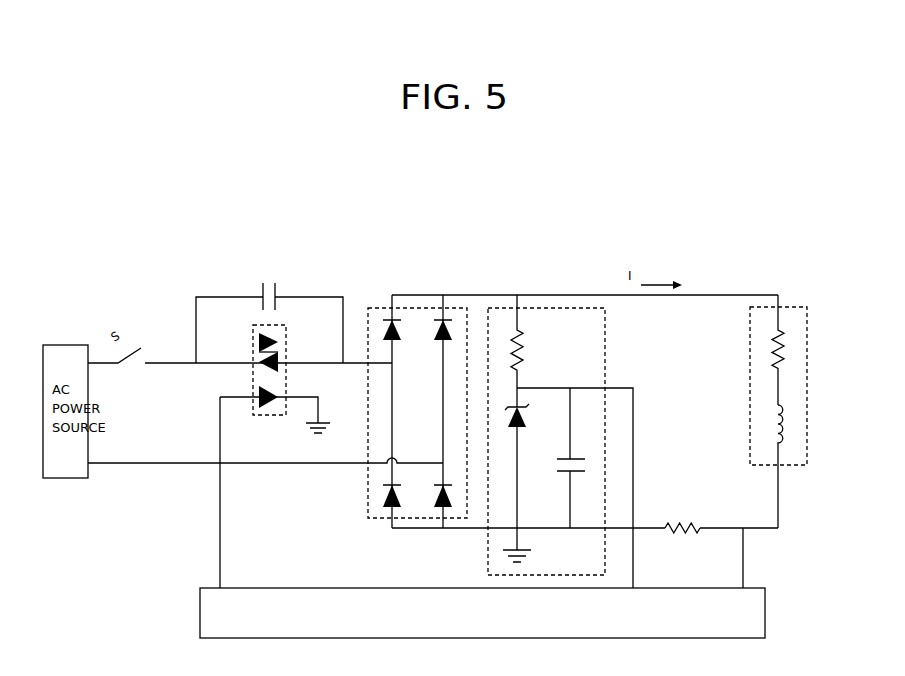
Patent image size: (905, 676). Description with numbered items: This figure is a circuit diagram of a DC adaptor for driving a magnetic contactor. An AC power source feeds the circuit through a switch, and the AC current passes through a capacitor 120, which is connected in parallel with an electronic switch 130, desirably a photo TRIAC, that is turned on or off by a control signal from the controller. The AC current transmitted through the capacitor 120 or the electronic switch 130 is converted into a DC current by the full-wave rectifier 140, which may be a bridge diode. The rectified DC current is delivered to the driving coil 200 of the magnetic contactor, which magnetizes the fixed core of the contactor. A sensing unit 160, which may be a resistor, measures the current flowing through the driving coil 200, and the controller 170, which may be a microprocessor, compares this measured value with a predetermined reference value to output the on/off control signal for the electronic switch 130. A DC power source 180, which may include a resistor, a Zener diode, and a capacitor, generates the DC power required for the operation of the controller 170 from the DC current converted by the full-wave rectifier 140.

The capacitor 120 is at (280, 272).
The electronic switch 130 is at (253, 393).
The full-wave rectifier 140 is at (378, 305).
The sensing unit 160 is at (563, 305).
The controller 170 is at (200, 617).
The DC power source 180 is at (686, 510).
The driving coil 200 is at (807, 380).